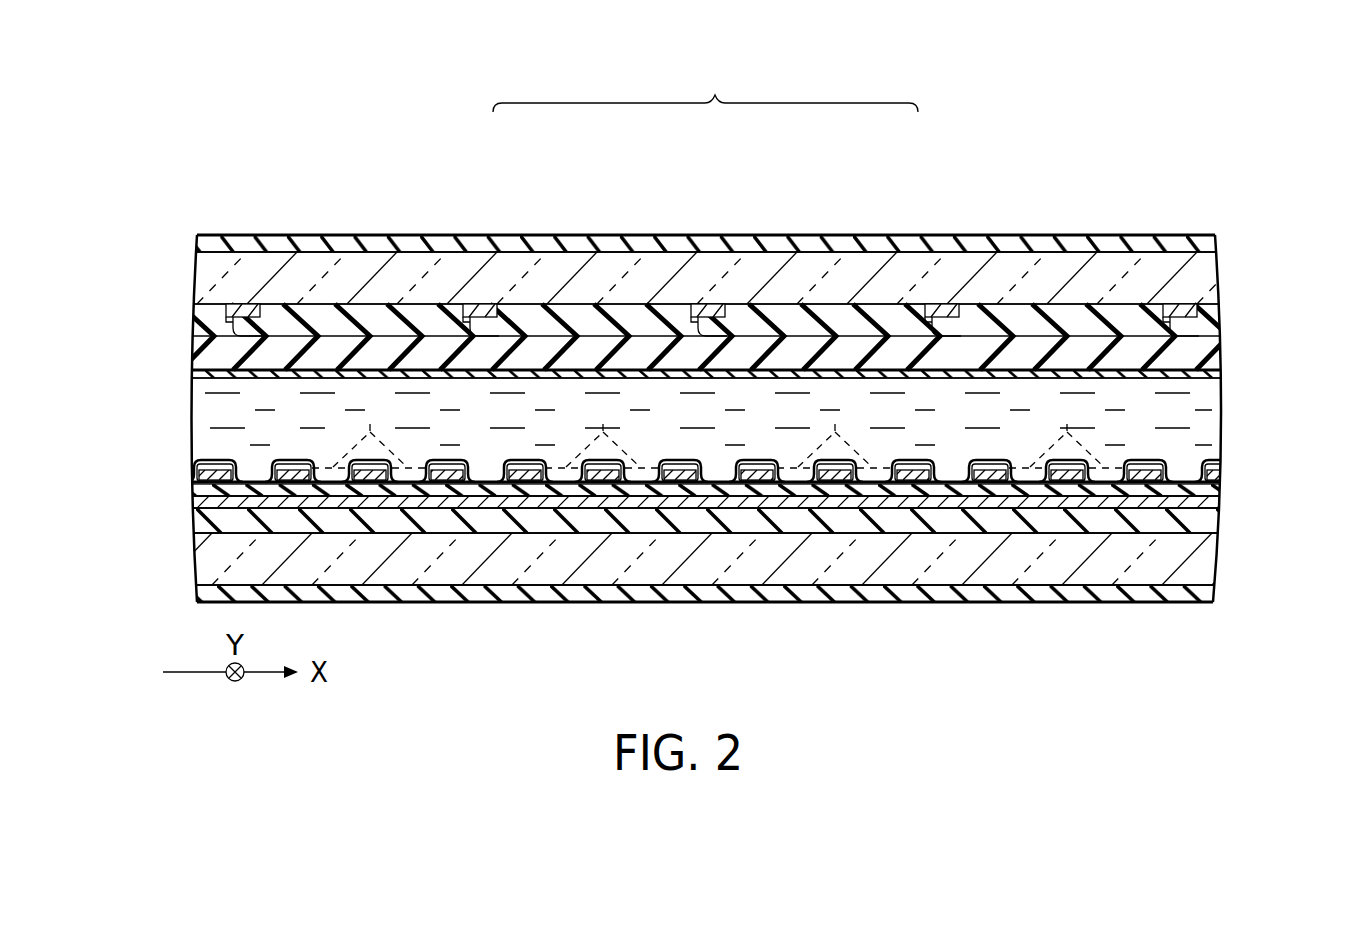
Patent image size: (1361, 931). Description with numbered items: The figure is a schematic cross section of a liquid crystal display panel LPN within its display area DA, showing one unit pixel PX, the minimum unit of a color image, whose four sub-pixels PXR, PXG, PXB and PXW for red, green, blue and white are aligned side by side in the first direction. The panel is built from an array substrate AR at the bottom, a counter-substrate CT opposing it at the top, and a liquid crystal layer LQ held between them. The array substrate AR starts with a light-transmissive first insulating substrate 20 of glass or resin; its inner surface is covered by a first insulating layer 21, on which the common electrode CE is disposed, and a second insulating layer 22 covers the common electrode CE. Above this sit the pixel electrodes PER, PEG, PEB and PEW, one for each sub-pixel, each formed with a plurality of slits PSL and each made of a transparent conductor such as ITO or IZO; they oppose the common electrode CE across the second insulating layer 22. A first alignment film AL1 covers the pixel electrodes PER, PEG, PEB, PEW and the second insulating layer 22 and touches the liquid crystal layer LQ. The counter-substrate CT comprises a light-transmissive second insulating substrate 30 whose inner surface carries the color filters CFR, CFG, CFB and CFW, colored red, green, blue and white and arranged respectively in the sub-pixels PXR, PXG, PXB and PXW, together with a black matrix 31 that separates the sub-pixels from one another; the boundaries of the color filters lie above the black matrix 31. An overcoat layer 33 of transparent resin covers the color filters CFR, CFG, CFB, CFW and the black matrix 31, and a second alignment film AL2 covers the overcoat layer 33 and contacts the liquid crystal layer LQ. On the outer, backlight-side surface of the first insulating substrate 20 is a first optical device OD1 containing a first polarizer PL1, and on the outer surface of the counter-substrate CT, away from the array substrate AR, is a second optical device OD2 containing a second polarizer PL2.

The second optical device OD2 is at (657, 224).
The second polarizer PL2 is at (200, 246).
The second insulating substrate 30 is at (205, 290).
The black matrix 31 is at (240, 304).
The color filter CFR is at (352, 325).
The color filter CFG is at (592, 325).
The color filter CFB is at (812, 325).
The color filter CFW is at (1040, 325).
The overcoat layer 33 is at (205, 352).
The second alignment film AL2 is at (205, 376).
The liquid crystal layer LQ is at (1217, 436).
The first alignment film AL1 is at (676, 544).
The second insulating layer 22 is at (205, 488).
The common electrode CE is at (205, 503).
The first insulating layer 21 is at (205, 520).
The first insulating substrate 20 is at (205, 560).
The first optical device OD1 is at (657, 621).
The first polarizer PL1 is at (200, 593).
The slits PSL is at (718, 430).
The pixel electrode PER is at (378, 484).
The pixel electrode PEG is at (610, 484).
The pixel electrode PEB is at (838, 484).
The pixel electrode PEW is at (1072, 484).
The unit pixel PX is at (705, 85).
The sub-pixel PXR is at (415, 222).
The sub-pixel PXG is at (654, 226).
The sub-pixel PXB is at (770, 226).
The sub-pixel PXW is at (992, 220).
The display area DA is at (1132, 180).
The liquid crystal display panel LPN is at (1245, 258).
The counter-substrate CT is at (1220, 318).
The array substrate AR is at (1227, 522).